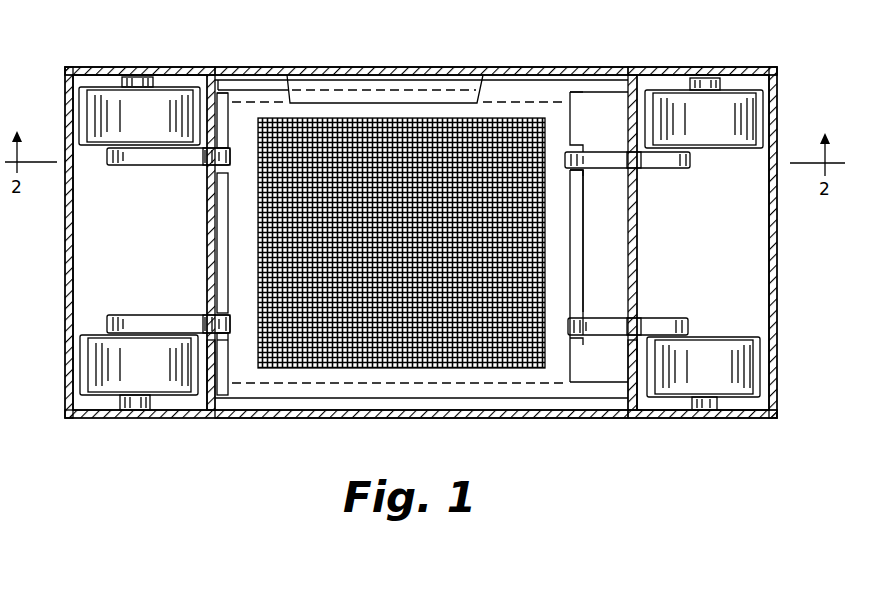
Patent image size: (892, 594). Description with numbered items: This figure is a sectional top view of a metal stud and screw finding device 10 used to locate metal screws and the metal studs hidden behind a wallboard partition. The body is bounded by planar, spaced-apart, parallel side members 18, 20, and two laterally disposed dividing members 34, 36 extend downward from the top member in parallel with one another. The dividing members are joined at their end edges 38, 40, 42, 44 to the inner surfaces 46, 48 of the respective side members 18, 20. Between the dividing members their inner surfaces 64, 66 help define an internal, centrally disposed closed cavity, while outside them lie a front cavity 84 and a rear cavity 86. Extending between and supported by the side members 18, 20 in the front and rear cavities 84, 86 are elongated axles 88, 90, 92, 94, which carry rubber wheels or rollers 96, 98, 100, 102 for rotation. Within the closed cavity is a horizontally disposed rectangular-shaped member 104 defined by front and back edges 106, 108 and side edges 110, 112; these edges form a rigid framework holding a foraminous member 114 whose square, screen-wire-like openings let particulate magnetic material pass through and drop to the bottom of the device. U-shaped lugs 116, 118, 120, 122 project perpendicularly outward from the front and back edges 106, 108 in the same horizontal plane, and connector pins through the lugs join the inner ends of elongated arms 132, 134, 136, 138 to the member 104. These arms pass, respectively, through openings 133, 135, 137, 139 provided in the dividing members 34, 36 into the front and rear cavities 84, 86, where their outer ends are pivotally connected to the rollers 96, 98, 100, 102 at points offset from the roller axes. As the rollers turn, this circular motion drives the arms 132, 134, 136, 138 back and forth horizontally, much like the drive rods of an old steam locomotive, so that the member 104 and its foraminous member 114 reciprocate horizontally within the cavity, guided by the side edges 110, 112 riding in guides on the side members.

The metal stud and screw finding device 10 is at (455, 48).
The side member 18 is at (648, 414).
The side member 20 is at (240, 68).
The dividing member 34 is at (188, 413).
The dividing member 36 is at (633, 410).
The end edge 38 is at (207, 408).
The end edge 40 is at (205, 70).
The end edge 42 is at (618, 416).
The end edge 44 is at (627, 74).
The inner surface 46 is at (345, 413).
The inner surface 48 is at (518, 72).
The inner surface 64 is at (214, 72).
The inner surface 66 is at (630, 108).
The front cavity 84 is at (96, 262).
The rear cavity 86 is at (750, 244).
The axle 88 is at (122, 410).
The axle 90 is at (125, 78).
The axle 92 is at (725, 412).
The axle 94 is at (718, 80).
The rubber wheel or roller 96 is at (143, 364).
The rubber wheel or roller 98 is at (147, 118).
The rubber wheel or roller 100 is at (722, 377).
The rubber wheel or roller 102 is at (722, 120).
The rectangular-shaped member 104 is at (506, 366).
The front edge 106 is at (222, 240).
The back edge 108 is at (578, 275).
The side edge 110 is at (425, 405).
The side edge 112 is at (318, 80).
The foraminous member 114 is at (401, 243).
The U-shaped lug 116 is at (232, 340).
The U-shaped lug 118 is at (222, 143).
The U-shaped lug 120 is at (580, 345).
The U-shaped lug 122 is at (583, 176).
The elongated arm 132 is at (118, 313).
The opening 133 is at (208, 300).
The elongated arm 134 is at (138, 163).
The opening 135 is at (210, 170).
The elongated arm 136 is at (686, 322).
The opening 137 is at (635, 318).
The elongated arm 138 is at (688, 160).
The opening 139 is at (638, 170).